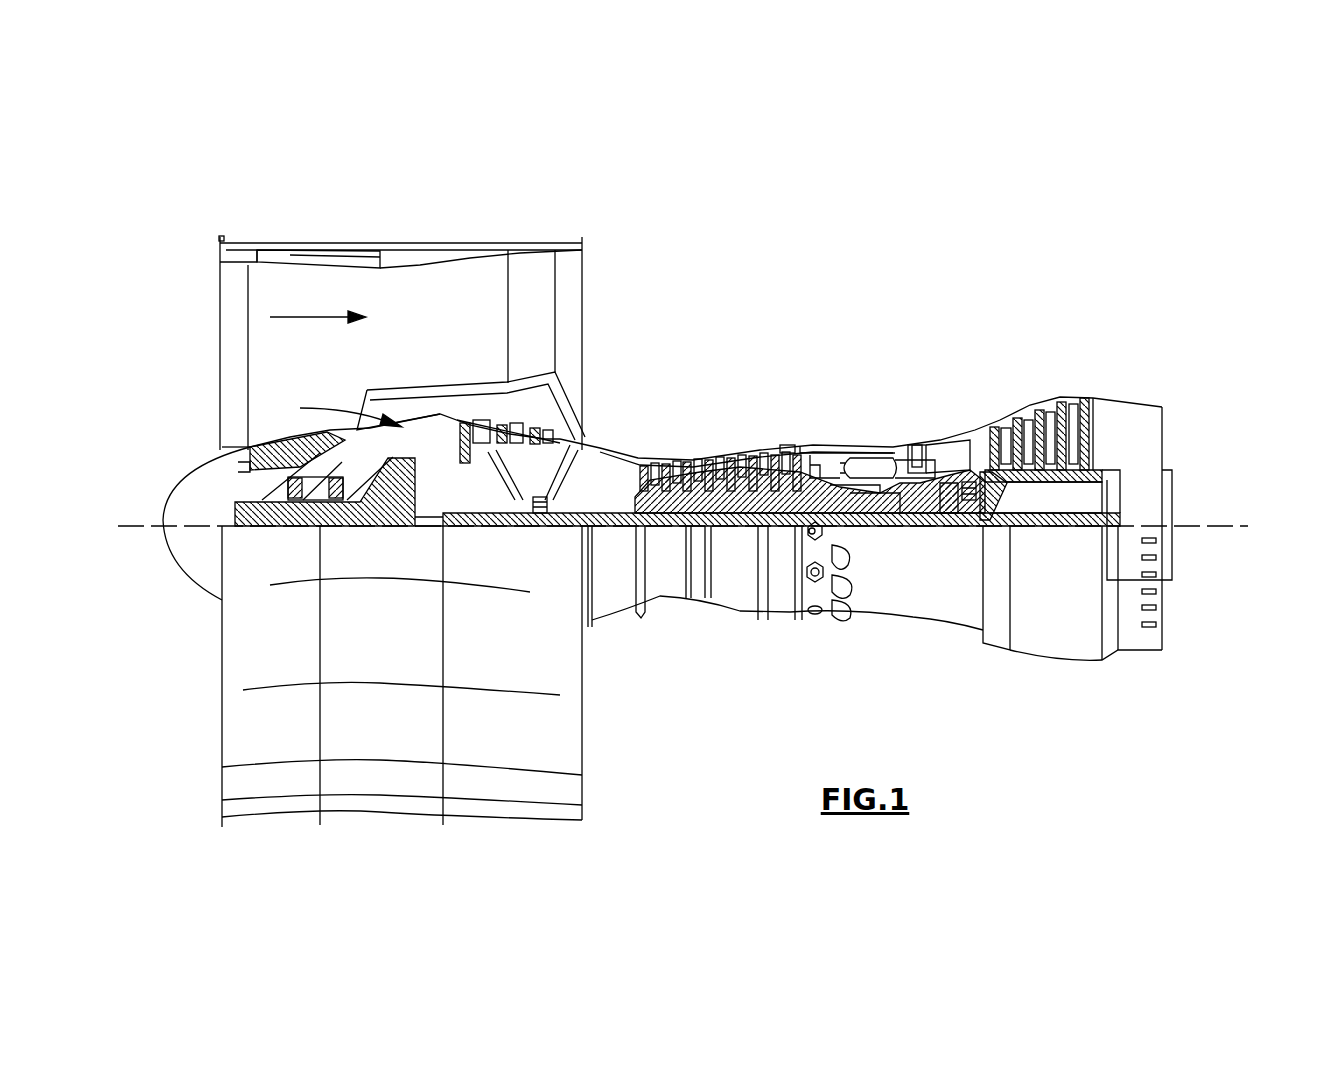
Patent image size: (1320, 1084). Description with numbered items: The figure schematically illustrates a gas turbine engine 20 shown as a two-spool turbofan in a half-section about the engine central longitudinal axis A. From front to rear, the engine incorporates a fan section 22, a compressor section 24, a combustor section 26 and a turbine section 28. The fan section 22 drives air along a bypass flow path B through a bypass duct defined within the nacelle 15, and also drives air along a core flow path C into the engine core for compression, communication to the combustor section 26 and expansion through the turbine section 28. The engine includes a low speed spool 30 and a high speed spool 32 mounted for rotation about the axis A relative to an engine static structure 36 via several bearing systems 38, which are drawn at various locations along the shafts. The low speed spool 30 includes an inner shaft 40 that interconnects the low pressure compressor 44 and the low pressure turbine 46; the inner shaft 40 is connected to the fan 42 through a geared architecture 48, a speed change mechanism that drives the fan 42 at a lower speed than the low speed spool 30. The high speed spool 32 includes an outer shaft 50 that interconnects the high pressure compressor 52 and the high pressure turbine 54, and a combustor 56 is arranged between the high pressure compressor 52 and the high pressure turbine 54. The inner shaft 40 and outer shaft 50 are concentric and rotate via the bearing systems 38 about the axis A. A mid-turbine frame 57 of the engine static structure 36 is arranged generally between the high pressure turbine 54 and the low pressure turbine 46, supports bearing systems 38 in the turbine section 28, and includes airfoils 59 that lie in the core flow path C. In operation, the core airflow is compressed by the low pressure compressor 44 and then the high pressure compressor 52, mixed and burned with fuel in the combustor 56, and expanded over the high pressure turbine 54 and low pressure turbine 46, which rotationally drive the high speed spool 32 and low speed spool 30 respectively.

The nacelle 15 is at (400, 249).
The gas turbine engine 20 is at (860, 294).
The fan section 22 is at (337, 240).
The compressor section 24 is at (628, 440).
The combustor section 26 is at (852, 432).
The turbine section 28 is at (998, 396).
The low speed spool 30 is at (742, 527).
The high speed spool 32 is at (785, 493).
The engine static structure 36 is at (780, 618).
The bearing systems 38 is at (538, 514).
The inner shaft 40 is at (600, 527).
The fan 42 is at (276, 357).
The low pressure compressor 44 is at (520, 432).
The low pressure turbine 46 is at (1047, 405).
The geared architecture 48 is at (410, 510).
The outer shaft 50 is at (868, 512).
The high pressure compressor 52 is at (717, 497).
The high pressure turbine 54 is at (921, 447).
The combustor 56 is at (853, 470).
The mid-turbine frame 57 is at (963, 437).
The airfoils 59 is at (1003, 496).
The engine central longitudinal axis A is at (1245, 526).
The bypass flow path B is at (310, 317).
The core flow path C is at (342, 412).